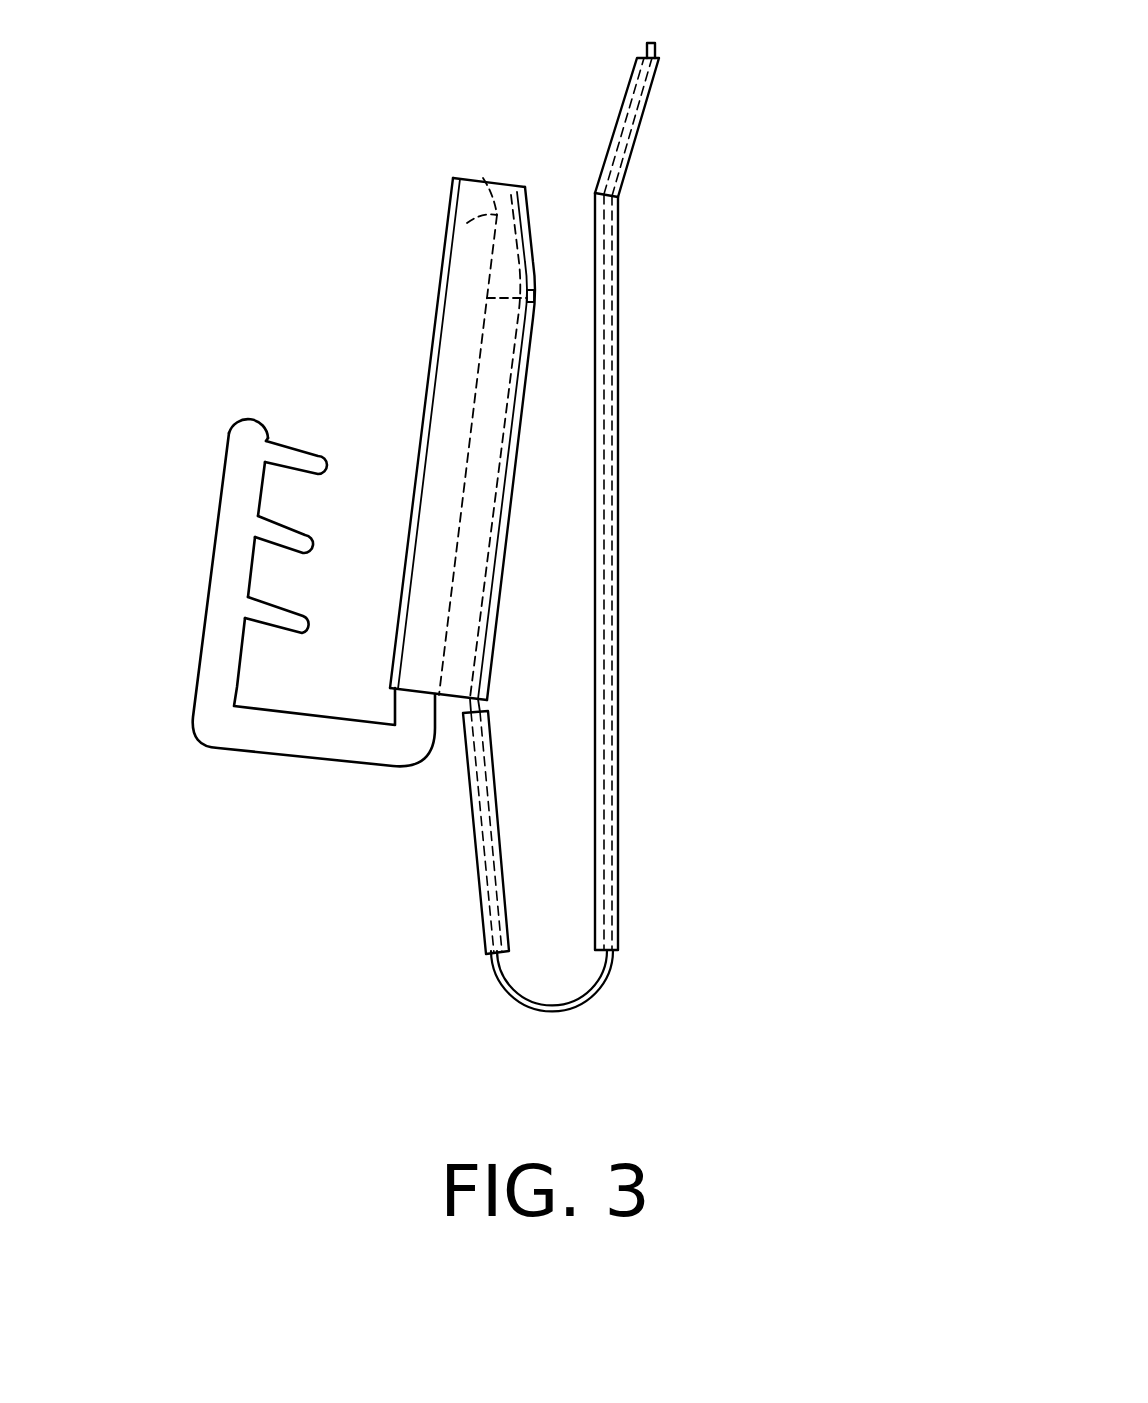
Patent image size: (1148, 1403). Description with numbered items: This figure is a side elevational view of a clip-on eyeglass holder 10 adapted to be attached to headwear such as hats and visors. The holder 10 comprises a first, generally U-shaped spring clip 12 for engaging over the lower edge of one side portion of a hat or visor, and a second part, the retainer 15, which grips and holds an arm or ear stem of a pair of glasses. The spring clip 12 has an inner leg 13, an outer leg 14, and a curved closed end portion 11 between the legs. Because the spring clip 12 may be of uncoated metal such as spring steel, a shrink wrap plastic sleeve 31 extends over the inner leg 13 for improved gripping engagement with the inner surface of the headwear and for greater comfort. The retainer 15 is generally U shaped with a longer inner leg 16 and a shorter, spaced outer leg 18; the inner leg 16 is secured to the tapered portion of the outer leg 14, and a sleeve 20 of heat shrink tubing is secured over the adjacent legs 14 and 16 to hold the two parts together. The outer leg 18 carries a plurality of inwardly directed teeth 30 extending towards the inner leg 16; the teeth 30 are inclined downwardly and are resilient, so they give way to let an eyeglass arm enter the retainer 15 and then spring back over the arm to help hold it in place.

The clip-on eyeglass holder 10 is at (840, 485).
The curved closed end portion 11 is at (527, 1000).
The spring clip 12 is at (600, 1008).
The inner leg 13 is at (608, 415).
The outer leg 14 is at (480, 842).
The retainer 15 is at (167, 685).
The inner leg 16 is at (483, 178).
The outer leg 18 is at (208, 553).
The sleeve 20 is at (450, 203).
The teeth 30 is at (293, 443).
The shrink wrap plastic sleeve 31 is at (620, 267).